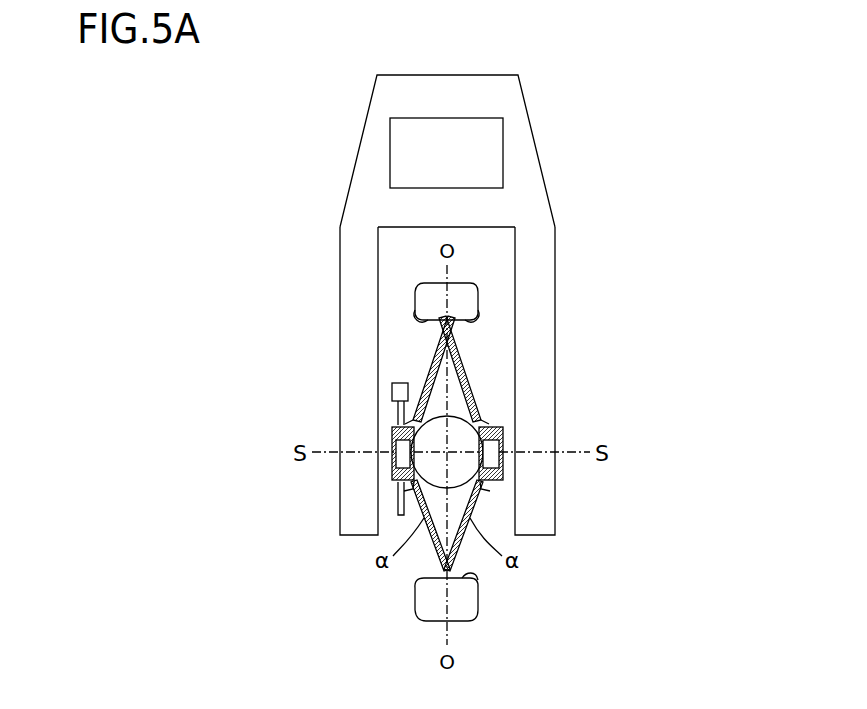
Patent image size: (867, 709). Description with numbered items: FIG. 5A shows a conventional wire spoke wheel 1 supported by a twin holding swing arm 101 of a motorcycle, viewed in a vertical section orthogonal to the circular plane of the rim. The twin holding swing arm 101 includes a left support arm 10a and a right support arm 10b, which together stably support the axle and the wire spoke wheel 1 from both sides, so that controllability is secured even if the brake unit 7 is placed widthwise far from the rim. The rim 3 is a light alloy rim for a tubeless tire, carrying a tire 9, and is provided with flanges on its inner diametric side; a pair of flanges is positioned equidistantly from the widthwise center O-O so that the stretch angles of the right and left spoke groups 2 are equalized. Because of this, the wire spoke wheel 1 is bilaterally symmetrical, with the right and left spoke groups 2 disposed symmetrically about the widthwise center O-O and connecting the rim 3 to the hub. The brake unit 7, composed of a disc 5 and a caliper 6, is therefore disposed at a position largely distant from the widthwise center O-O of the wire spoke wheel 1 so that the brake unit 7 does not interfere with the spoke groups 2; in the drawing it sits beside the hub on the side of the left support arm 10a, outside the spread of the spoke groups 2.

The twin holding swing arm 101 is at (548, 82).
The left support arm 10a is at (347, 519).
The right support arm 10b is at (548, 519).
The wire spoke wheel 1 is at (496, 386).
The spoke groups 2 is at (430, 384).
The rim 3 is at (472, 332).
The disc 5 is at (398, 412).
The caliper 6 is at (392, 391).
The brake unit 7 is at (300, 345).
The tire 9 is at (459, 283).